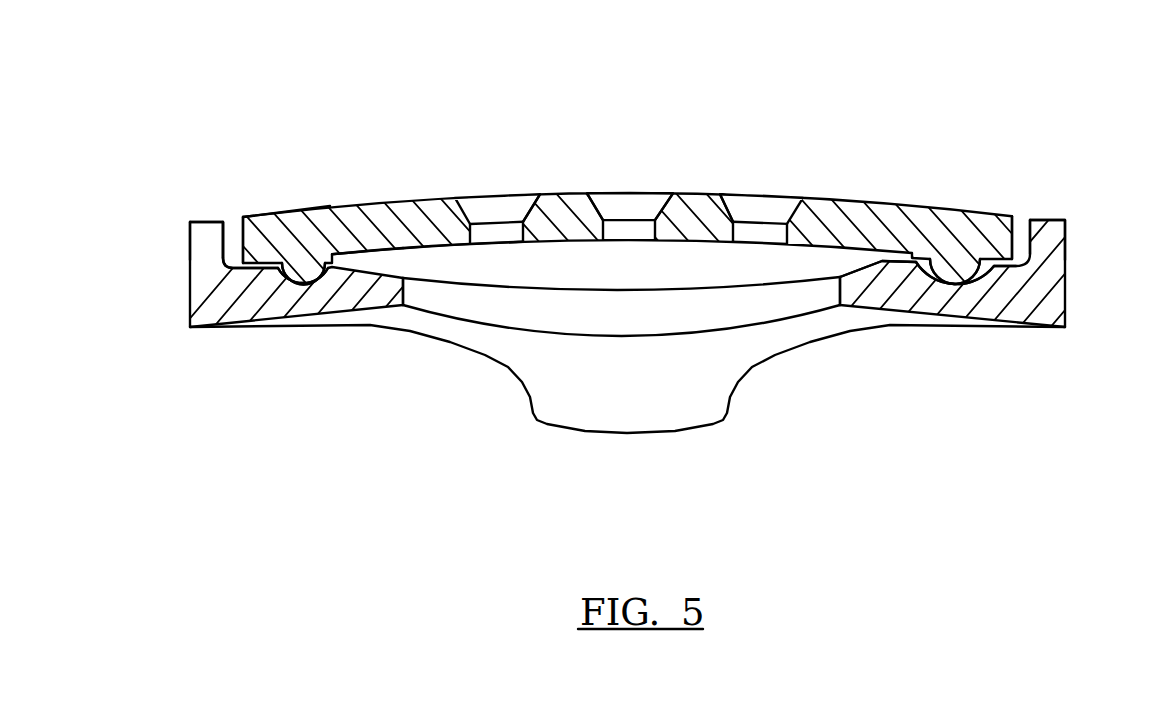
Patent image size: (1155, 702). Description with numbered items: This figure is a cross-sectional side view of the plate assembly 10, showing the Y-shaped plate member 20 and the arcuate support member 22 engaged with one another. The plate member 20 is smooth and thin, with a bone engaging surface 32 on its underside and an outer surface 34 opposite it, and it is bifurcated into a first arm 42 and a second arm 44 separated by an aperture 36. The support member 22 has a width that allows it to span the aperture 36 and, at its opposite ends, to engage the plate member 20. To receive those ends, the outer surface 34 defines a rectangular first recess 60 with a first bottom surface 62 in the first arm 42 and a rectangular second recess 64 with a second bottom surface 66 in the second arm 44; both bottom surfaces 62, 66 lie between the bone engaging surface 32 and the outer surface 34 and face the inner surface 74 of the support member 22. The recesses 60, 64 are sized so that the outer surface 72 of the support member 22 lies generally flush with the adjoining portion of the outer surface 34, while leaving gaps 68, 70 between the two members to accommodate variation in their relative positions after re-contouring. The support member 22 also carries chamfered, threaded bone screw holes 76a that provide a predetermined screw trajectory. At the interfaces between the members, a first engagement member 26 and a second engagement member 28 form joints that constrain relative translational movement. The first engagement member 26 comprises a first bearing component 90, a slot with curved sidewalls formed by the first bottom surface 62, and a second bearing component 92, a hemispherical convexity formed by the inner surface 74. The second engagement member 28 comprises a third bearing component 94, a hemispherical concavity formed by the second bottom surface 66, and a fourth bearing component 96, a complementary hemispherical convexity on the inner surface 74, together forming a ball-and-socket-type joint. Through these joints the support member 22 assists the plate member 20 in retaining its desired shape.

The plate assembly 10 is at (285, 66).
The plate member 20 is at (207, 288).
The support member 22 is at (692, 198).
The first engagement member 26 is at (1012, 280).
The second engagement member 28 is at (268, 290).
The bone engaging surface 32 is at (384, 300).
The outer surface 34 is at (198, 219).
The aperture 36 is at (645, 280).
The first arm 42 is at (1050, 240).
The second arm 44 is at (209, 232).
The first recess 60 is at (1005, 256).
The first bottom surface 62 is at (905, 245).
The second recess 64 is at (268, 226).
The second bottom surface 66 is at (395, 258).
The gap 68 is at (1022, 234).
The gap 70 is at (233, 230).
The outer surface 72 is at (300, 212).
The inner surface 74 is at (440, 252).
The bone screw holes 76a is at (587, 198).
The first bearing component 90 is at (953, 286).
The second bearing component 92 is at (992, 272).
The third bearing component 94 is at (312, 280).
The fourth bearing component 96 is at (302, 286).